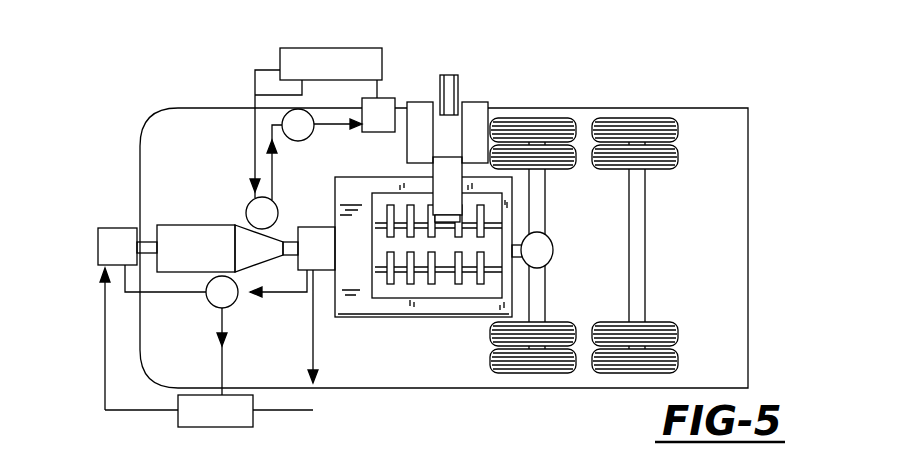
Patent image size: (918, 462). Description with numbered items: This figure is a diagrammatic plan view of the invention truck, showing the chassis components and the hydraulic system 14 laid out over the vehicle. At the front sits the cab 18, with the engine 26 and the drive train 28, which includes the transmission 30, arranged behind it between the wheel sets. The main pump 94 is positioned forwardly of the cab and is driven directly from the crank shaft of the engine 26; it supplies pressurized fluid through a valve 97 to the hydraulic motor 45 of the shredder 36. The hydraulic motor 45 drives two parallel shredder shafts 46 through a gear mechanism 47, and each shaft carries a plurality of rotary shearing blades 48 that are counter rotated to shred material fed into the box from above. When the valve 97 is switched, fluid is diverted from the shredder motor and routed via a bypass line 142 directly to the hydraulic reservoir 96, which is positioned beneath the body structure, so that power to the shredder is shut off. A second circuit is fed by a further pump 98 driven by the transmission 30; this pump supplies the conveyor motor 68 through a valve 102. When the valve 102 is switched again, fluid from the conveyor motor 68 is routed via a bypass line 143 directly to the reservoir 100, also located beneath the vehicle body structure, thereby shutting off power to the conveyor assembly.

The hydraulic system 14 is at (122, 302).
The cab 18 is at (142, 145).
The engine 26 is at (196, 248).
The drive train 28 is at (545, 250).
The transmission 30 is at (260, 262).
The shredder 36 is at (450, 318).
The hydraulic motor 45 is at (307, 227).
The shredder shafts 46 is at (492, 278).
The gear mechanism 47 is at (355, 309).
The rotary shearing blades 48 is at (485, 213).
The conveyor motor 68 is at (392, 97).
The main pump 94 is at (102, 228).
The hydraulic reservoir 96 is at (253, 420).
The valve 97 is at (208, 300).
The further pump 98 is at (246, 210).
The reservoir 100 is at (287, 49).
The valve 102 is at (313, 136).
The bypass line 142 is at (222, 378).
The bypass line 143 is at (302, 95).